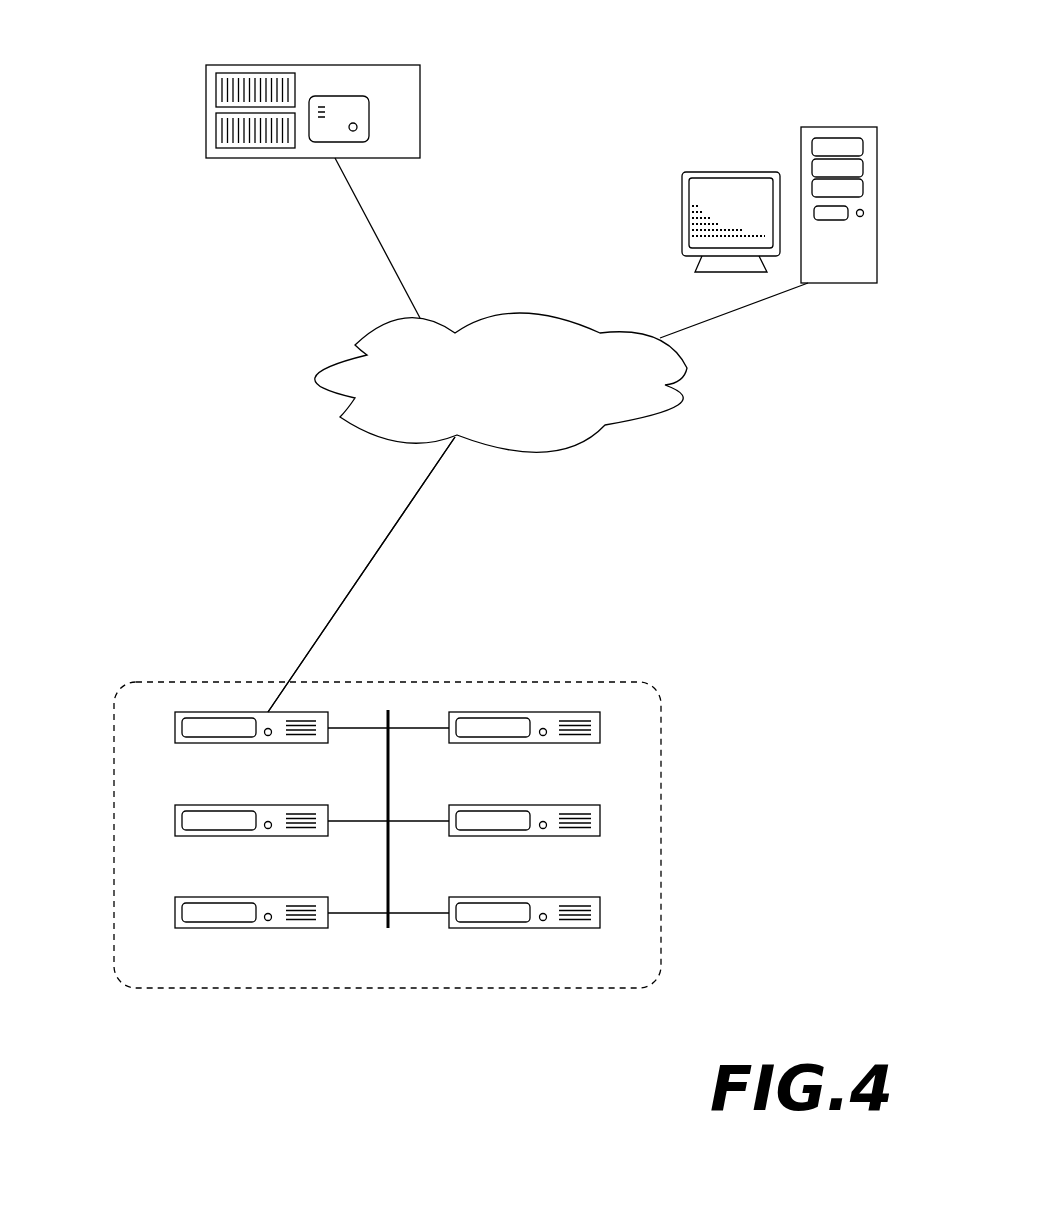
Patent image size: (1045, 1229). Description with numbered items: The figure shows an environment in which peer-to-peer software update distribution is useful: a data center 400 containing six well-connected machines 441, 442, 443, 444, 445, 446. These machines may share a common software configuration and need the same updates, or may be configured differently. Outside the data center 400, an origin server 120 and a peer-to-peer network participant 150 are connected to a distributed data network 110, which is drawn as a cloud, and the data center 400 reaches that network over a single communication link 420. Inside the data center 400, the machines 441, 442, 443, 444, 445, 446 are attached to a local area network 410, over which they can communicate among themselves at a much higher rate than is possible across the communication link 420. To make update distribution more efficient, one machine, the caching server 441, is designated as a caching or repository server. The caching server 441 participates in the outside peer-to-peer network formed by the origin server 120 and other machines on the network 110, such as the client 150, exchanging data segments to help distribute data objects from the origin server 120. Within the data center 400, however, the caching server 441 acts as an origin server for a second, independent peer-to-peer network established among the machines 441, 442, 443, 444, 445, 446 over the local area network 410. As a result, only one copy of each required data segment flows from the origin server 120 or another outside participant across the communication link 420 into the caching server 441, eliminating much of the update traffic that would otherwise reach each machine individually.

The origin server 120 is at (240, 65).
The distributed data network 110 is at (652, 416).
The peer-to-peer network participant 150 is at (877, 270).
The data center 400 is at (112, 992).
The communication link 420 is at (343, 597).
The local area network 410 is at (388, 928).
The caching server 441 is at (195, 744).
The machine 442 is at (580, 744).
The machine 443 is at (195, 837).
The machine 444 is at (580, 837).
The machine 445 is at (195, 929).
The machine 446 is at (580, 929).